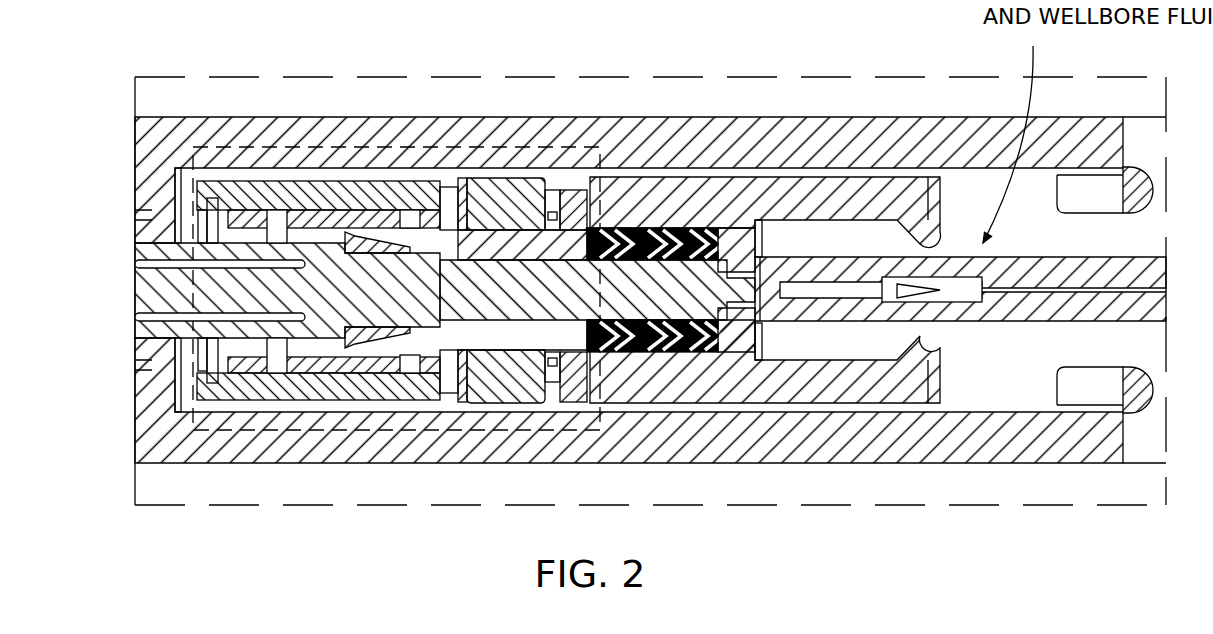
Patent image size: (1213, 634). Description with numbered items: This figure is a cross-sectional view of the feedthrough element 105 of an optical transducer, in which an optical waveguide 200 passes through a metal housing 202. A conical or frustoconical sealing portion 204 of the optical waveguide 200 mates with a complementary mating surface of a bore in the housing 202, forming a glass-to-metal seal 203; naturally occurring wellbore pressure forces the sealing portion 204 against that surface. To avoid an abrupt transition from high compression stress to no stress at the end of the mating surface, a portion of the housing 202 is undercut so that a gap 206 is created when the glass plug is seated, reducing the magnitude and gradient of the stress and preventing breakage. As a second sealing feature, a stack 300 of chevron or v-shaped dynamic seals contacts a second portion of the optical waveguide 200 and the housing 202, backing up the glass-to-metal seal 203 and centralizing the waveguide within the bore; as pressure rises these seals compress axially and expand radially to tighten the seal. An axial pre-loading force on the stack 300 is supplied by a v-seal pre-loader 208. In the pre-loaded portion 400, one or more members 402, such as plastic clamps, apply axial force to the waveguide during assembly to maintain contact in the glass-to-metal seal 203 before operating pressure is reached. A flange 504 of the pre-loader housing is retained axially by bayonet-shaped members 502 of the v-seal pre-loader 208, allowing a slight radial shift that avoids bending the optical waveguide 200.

The feedthrough element 105 is at (503, 38).
The optical waveguide 200 is at (135, 281).
The housing 202 is at (863, 190).
The glass-to-metal seal 203 is at (732, 268).
The sealing portion 204 is at (706, 296).
The gap 206 is at (757, 278).
The v-seal pre-loader 208 is at (523, 187).
The stack 300 is at (650, 190).
The pre-loaded portion 400 is at (270, 430).
The member 402 is at (383, 342).
The bayonet-shaped member 502 is at (440, 187).
The flange 504 is at (462, 183).